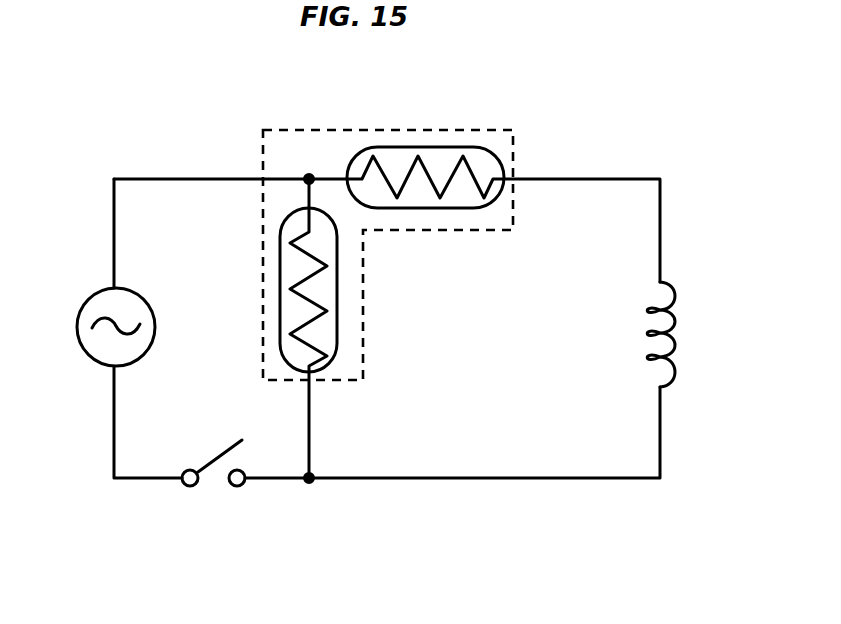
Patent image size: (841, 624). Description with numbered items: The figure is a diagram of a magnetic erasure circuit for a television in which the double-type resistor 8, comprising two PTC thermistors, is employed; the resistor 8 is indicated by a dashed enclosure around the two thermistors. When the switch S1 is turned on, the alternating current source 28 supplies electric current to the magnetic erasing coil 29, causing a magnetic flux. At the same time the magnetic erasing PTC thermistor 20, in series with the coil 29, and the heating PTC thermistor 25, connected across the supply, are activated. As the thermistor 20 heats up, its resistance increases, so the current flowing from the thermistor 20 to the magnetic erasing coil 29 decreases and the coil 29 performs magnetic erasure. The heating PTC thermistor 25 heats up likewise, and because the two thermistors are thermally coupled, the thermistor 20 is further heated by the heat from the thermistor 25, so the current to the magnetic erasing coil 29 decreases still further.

The double-type resistor 8 is at (350, 128).
The magnetic erasing PTC thermistor 20 is at (432, 147).
The heating PTC thermistor 25 is at (337, 315).
The alternating current source 28 is at (136, 295).
The switch S1 is at (216, 494).
The magnetic erasing coil 29 is at (676, 352).